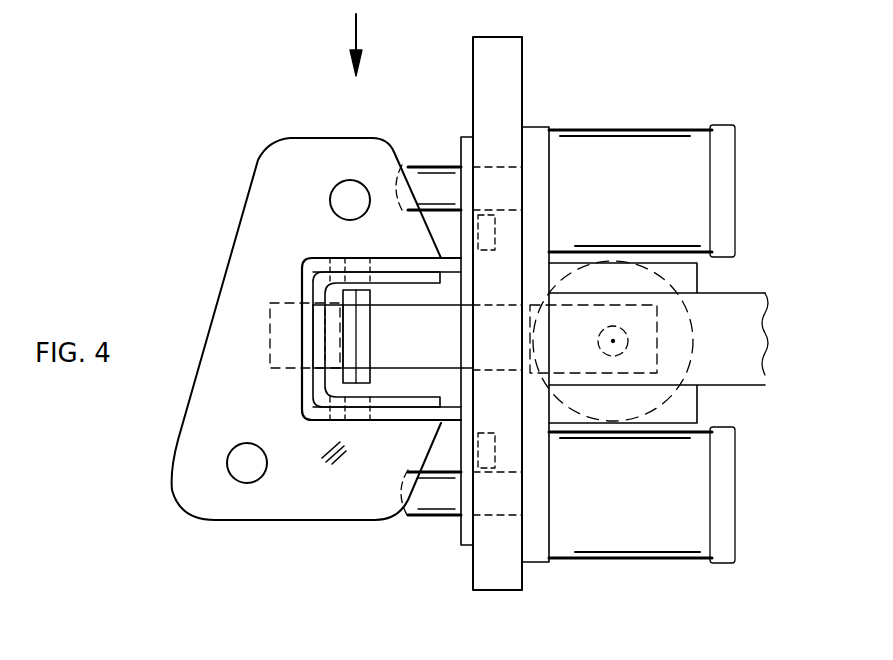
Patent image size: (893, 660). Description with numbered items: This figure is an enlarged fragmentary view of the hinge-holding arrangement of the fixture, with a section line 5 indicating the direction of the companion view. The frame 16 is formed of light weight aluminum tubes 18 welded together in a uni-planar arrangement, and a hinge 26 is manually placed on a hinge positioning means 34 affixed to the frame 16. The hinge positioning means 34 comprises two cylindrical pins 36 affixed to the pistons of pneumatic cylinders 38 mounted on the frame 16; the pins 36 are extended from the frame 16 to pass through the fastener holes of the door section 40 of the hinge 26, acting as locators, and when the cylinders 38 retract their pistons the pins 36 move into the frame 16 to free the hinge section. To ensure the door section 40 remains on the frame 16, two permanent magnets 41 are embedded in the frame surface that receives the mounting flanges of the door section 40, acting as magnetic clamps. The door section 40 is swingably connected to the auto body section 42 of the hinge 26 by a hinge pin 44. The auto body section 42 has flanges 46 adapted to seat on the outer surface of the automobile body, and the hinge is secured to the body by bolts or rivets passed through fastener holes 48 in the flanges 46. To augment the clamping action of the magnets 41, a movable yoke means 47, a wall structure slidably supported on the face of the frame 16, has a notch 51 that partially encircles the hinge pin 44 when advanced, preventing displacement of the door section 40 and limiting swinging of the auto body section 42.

The section line 5- 5 is at (354, 30).
The frame 16 is at (524, 47).
The aluminum tubes 18 is at (720, 378).
The hinge 26 is at (240, 212).
The hinge positioning means 34 is at (522, 122).
The cylindrical pins 36 is at (436, 165).
The pneumatic cylinders 38 is at (658, 128).
The door section 40 is at (302, 395).
The permanent magnets 41 is at (495, 235).
The auto body section 42 is at (318, 282).
The hinge pin 44 is at (365, 330).
The flanges 46 is at (303, 524).
The yoke means 47 is at (270, 320).
The fastener holes 48 is at (331, 190).
The notch 51 is at (370, 358).